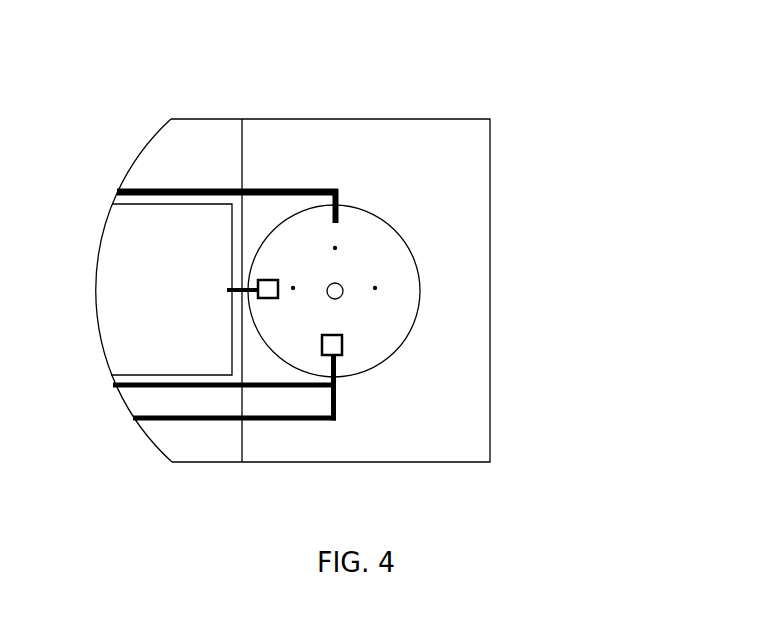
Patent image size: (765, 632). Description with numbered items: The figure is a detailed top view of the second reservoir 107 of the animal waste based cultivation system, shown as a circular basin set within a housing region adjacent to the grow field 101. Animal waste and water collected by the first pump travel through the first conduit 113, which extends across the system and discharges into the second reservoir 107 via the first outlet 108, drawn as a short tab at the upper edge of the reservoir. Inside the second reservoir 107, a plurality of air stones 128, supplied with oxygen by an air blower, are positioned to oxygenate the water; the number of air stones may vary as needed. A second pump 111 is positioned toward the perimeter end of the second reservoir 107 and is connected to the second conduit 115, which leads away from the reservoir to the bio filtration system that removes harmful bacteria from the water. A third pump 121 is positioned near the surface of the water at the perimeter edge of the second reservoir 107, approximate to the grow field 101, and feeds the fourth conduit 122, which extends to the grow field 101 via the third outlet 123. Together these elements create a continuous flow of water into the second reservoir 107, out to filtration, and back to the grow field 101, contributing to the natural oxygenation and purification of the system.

The grow field 101 is at (293, 271).
The first conduit 113 is at (114, 290).
The third outlet 123 is at (227, 186).
The first outlet 108 is at (428, 143).
The fourth conduit 122 is at (220, 221).
The third pump 121 is at (306, 190).
The second reservoir 107 is at (456, 293).
The air stones 128 is at (446, 212).
The second pump 111 is at (452, 385).
The second conduit 115 is at (324, 435).